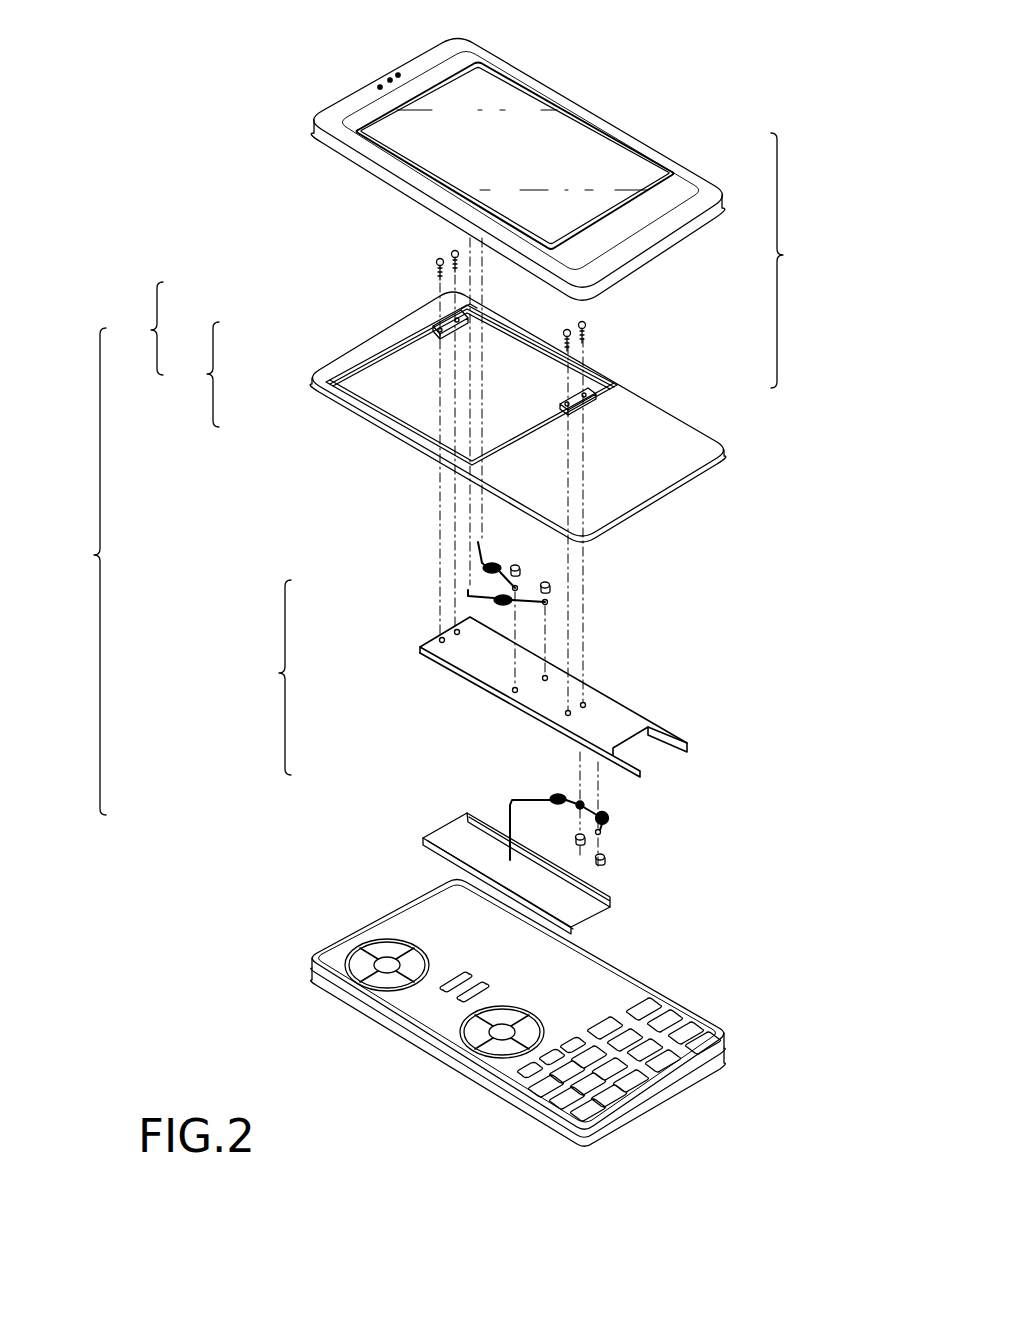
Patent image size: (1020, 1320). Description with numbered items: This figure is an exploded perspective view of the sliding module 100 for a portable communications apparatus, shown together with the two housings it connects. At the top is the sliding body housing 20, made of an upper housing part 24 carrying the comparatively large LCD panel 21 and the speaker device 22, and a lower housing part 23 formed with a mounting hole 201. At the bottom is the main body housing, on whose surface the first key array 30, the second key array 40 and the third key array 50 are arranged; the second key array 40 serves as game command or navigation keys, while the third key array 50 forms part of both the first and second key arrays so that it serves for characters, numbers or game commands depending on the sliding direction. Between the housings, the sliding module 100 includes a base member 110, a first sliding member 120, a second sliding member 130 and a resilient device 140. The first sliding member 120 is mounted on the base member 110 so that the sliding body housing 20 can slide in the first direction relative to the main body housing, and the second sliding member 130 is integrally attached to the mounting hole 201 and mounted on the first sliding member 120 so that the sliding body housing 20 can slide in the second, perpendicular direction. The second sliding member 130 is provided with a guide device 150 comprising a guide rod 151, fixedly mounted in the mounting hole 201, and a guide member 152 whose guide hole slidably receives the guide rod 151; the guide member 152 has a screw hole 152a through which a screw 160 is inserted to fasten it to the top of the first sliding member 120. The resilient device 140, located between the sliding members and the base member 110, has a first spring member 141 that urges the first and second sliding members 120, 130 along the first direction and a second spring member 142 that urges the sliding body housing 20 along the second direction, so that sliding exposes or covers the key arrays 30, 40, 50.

The sliding body housing 20 is at (792, 260).
The LCD panel 21 is at (578, 132).
The speaker device 22 is at (385, 82).
The lower housing part 23 is at (707, 445).
The upper housing part 24 is at (707, 188).
The first key array 30 is at (767, 1097).
The second key array 40 is at (267, 1018).
The third key array 50 is at (687, 1108).
The sliding module 100 is at (81, 571).
The base member 110 is at (596, 908).
The first sliding member 120 is at (640, 718).
The second sliding member 130 is at (138, 328).
The resilient device 140 is at (264, 677).
The first spring member 141 is at (605, 818).
The second spring member 142 is at (493, 607).
The guide device 150 is at (194, 374).
The guide rod 151 is at (465, 452).
The guide member 152 is at (436, 325).
The screw hole 152a is at (603, 372).
The screw 160 is at (590, 326).
The mounting hole 201 is at (452, 303).